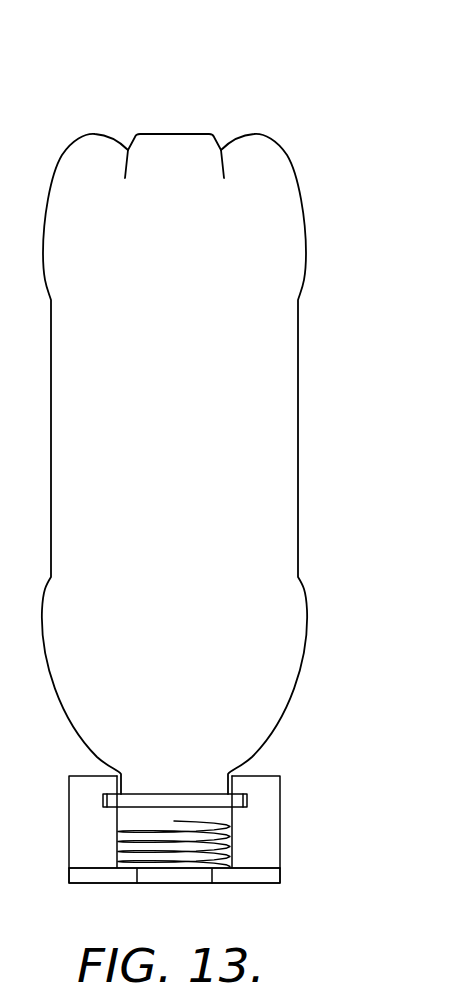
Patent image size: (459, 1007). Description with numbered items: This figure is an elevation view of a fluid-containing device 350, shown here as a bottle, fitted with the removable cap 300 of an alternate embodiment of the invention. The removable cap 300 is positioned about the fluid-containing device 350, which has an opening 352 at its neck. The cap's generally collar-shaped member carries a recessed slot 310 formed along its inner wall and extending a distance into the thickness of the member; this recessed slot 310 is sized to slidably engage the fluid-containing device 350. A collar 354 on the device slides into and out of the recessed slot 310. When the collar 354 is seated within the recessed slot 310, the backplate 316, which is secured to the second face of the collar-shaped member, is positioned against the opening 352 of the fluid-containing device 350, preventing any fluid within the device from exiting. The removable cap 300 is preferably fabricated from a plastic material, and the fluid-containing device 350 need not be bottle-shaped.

The removable cap 300 is at (194, 852).
The recessed slot 310 is at (233, 810).
The backplate 316 is at (280, 876).
The fluid-containing device 350 is at (298, 520).
The opening 352 is at (173, 868).
The collar 354 is at (103, 802).